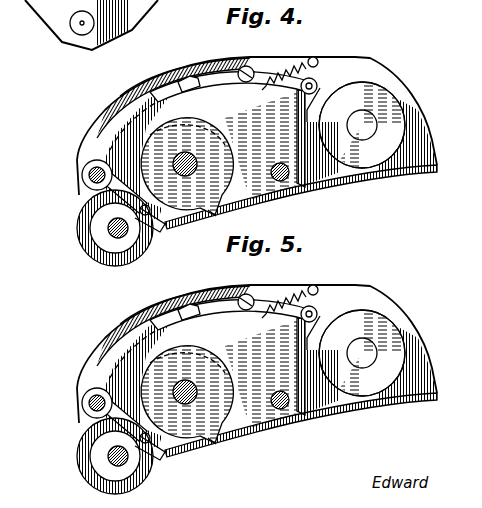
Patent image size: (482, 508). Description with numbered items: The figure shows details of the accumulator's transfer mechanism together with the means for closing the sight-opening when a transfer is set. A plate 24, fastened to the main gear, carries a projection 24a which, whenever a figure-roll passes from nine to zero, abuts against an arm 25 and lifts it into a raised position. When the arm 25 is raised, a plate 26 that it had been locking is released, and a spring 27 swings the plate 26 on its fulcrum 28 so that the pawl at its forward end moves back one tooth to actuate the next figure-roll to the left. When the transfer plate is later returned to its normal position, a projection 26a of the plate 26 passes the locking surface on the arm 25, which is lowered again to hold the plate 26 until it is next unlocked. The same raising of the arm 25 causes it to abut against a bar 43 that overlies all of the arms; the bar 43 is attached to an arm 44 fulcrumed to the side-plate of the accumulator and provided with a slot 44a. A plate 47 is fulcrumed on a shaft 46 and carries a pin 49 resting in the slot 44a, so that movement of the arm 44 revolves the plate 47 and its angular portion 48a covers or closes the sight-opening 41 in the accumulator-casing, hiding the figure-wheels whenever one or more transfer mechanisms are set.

In FIG. 4, the plate 24 is at (143, 158).
In FIG. 5, the plate 24 is at (147, 373).
In FIG. 4, the projection 24a is at (216, 216).
In FIG. 5, the projection 24a is at (216, 444).
In FIG. 4, the arm 25 is at (134, 90).
In FIG. 5, the arm 25 is at (122, 325).
In FIG. 4, the plate 26 is at (330, 180).
In FIG. 5, the plate 26 is at (330, 408).
In FIG. 4, the projection 26a is at (266, 110).
In FIG. 5, the projection 26a is at (240, 316).
In FIG. 4, the spring 27 is at (310, 58).
In FIG. 5, the spring 27 is at (310, 286).
In FIG. 4, the fulcrum 28 is at (285, 181).
In FIG. 5, the fulcrum 28 is at (285, 409).
In FIG. 4, the sight-opening 41 is at (90, 218).
In FIG. 5, the sight-opening 41 is at (90, 444).
In FIG. 4, the bar 43 is at (190, 76).
In FIG. 5, the bar 43 is at (190, 304).
In FIG. 4, the arm 44 is at (246, 65).
In FIG. 5, the arm 44 is at (246, 293).
In FIG. 4, the slot 44a is at (152, 214).
In FIG. 5, the slot 44a is at (152, 442).
In FIG. 4, the shaft 46 is at (145, 238).
In FIG. 5, the shaft 46 is at (145, 466).
In FIG. 4, the plate 47 is at (106, 245).
In FIG. 5, the plate 47 is at (106, 473).
In FIG. 4, the angular portion 48a is at (92, 231).
In FIG. 5, the angular portion 48a is at (92, 459).
In FIG. 4, the pin 49 is at (82, 174).
In FIG. 5, the pin 49 is at (82, 402).